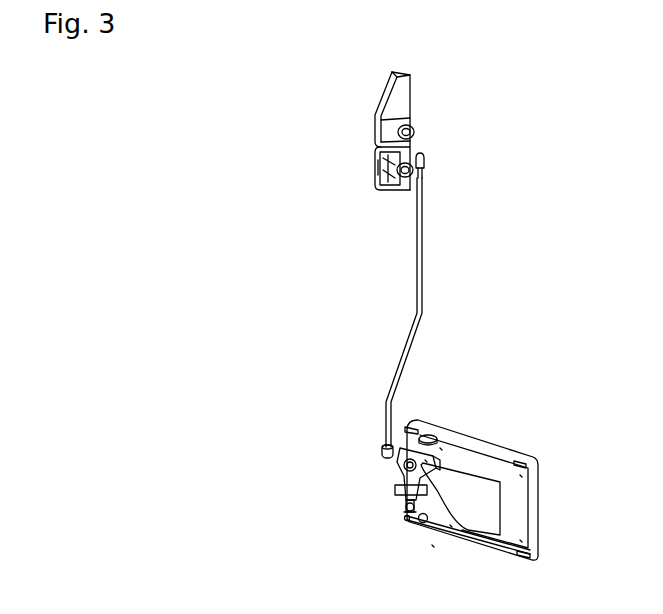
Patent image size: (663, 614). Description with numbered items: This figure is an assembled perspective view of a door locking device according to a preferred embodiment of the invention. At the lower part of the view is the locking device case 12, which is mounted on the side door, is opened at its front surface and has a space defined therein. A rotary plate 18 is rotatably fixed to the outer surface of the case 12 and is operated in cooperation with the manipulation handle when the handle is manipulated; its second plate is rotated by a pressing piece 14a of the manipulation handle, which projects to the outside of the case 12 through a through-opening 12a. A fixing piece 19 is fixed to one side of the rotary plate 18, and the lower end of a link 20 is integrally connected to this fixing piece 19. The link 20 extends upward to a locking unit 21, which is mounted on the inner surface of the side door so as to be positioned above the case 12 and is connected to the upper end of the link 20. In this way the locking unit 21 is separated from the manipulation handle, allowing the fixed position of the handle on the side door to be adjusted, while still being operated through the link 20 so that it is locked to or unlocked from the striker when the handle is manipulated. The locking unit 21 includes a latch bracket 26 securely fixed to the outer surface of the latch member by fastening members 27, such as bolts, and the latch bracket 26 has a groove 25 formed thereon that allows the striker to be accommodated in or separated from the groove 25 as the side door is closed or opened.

The locking device case 12 is at (481, 436).
The through-opening 12a is at (477, 543).
The pressing piece 14a is at (392, 500).
The rotary plate 18 is at (393, 480).
The fixing piece 19 is at (376, 460).
The link 20 is at (417, 282).
The locking unit 21 is at (360, 130).
The groove 25 is at (367, 167).
The latch bracket 26 is at (404, 106).
The fastening members 27 is at (413, 133).